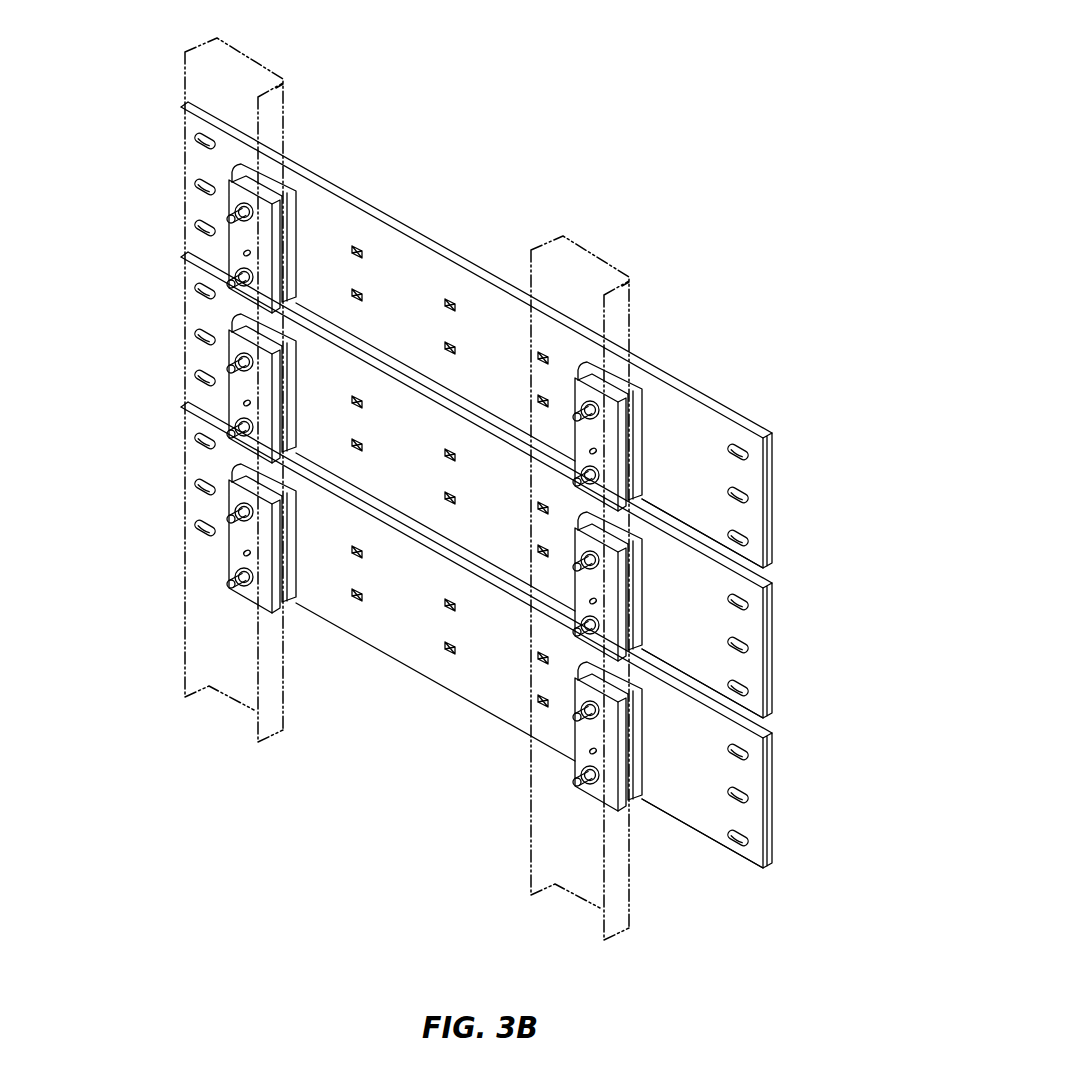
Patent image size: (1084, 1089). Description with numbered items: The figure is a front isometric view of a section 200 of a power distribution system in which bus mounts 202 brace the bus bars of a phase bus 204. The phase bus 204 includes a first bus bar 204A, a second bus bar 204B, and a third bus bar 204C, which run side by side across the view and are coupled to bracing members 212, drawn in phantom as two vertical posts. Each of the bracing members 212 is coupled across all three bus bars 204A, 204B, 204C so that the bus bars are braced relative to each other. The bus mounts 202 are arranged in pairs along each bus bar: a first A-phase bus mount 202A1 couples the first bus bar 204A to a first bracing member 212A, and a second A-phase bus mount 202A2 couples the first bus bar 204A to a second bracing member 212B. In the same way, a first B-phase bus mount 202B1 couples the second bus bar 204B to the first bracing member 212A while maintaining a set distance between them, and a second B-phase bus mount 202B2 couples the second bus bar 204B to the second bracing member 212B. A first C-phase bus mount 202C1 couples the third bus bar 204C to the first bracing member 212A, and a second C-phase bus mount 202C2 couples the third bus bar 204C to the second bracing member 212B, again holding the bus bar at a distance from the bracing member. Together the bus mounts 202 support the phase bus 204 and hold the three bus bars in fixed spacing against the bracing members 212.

The section 200 is at (500, 470).
The bus mounts 202 is at (500, 485).
The first A-phase bus mount 202A1 is at (231, 173).
The first B-phase bus mount 202B1 is at (231, 323).
The first C-phase bus mount 202C1 is at (231, 473).
The second A-phase bus mount 202A2 is at (645, 407).
The second B-phase bus mount 202B2 is at (645, 557).
The second C-phase bus mount 202C2 is at (645, 707).
The phase bus 204 is at (785, 650).
The first bus bar 204A is at (772, 517).
The second bus bar 204B is at (772, 667).
The third bus bar 204C is at (772, 817).
The bracing members 212 is at (450, 470).
The first bracing member 212A is at (281, 84).
The second bracing member 212B is at (627, 282).